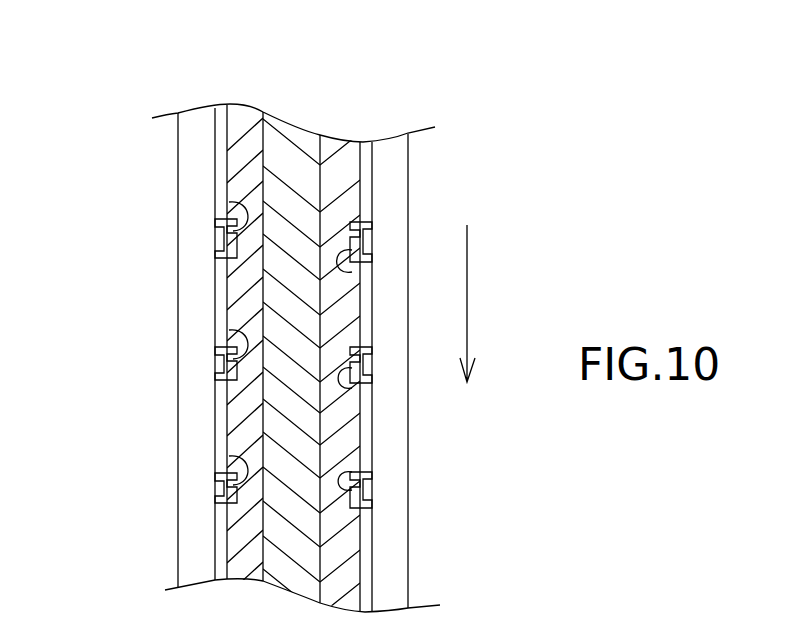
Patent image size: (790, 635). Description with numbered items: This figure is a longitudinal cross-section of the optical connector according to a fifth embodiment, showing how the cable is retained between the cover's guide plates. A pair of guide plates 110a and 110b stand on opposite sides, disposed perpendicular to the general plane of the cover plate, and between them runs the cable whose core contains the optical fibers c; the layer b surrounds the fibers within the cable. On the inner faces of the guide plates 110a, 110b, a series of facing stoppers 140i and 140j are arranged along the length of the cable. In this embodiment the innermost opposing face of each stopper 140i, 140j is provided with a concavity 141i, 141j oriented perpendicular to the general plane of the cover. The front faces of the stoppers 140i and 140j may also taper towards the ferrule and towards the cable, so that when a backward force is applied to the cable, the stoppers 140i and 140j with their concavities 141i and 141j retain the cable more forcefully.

The guide plate 110a is at (193, 140).
The guide plate 110b is at (398, 157).
The stopper 140i is at (215, 255).
The concavity 141i is at (229, 202).
The stopper 140j is at (373, 227).
The concavity 141j is at (345, 265).
The first layer b is at (245, 118).
The optical fibers c is at (283, 137).